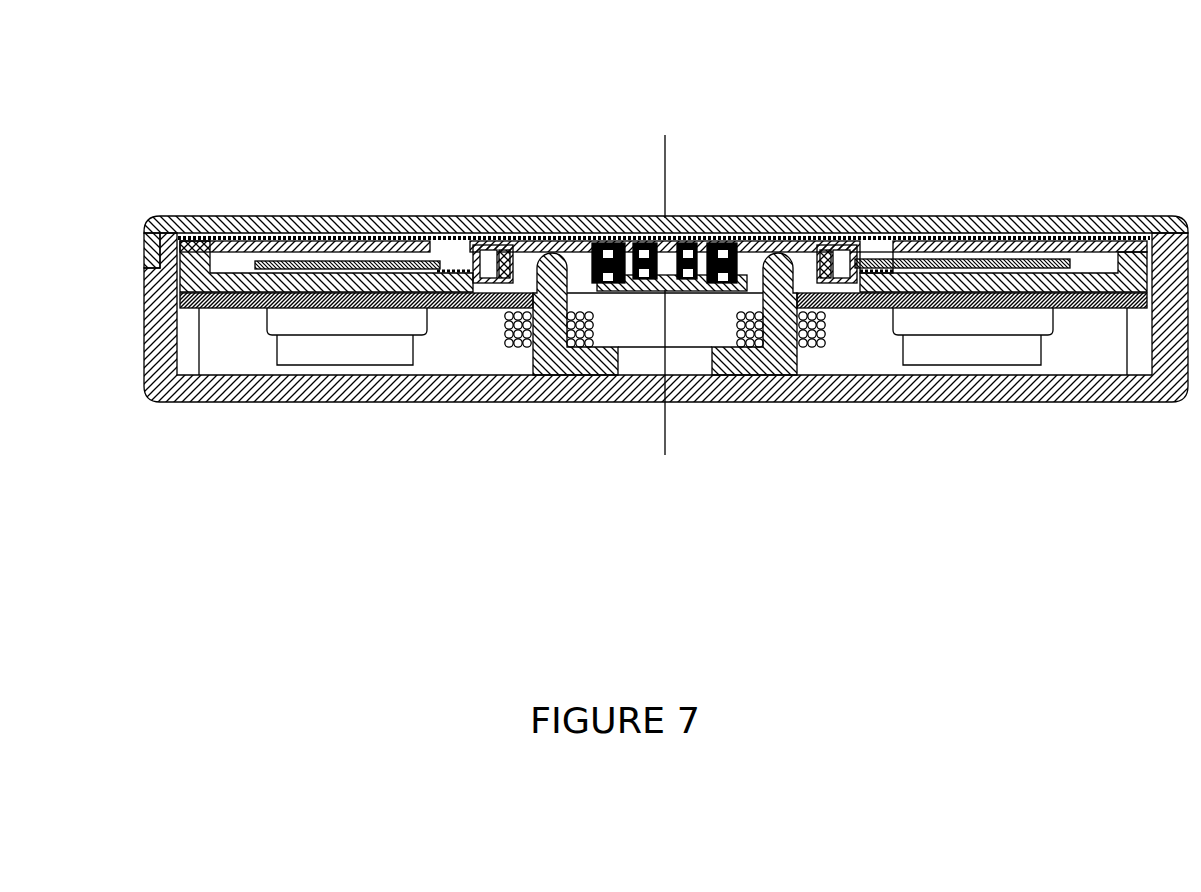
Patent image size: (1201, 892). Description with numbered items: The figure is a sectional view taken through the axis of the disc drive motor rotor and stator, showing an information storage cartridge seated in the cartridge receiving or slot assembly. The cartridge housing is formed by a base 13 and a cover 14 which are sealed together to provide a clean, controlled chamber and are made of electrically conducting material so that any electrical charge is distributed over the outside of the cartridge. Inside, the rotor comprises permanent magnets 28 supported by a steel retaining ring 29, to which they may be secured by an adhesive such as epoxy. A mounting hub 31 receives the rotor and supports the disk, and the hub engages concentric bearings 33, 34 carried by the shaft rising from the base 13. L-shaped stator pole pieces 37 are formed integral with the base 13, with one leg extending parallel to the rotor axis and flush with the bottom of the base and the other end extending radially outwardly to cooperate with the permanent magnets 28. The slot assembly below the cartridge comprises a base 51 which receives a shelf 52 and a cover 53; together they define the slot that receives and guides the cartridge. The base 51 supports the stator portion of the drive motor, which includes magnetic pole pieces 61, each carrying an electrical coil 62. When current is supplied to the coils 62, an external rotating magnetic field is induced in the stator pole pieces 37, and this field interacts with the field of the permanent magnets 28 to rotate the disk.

The base 13 is at (275, 258).
The cover 14 is at (1000, 215).
The permanent magnets 28 is at (832, 218).
The steel retaining ring 29 is at (860, 218).
The mounting hub 31 is at (482, 233).
The bearing 33 is at (704, 218).
The bearing 34 is at (601, 218).
The L-shaped stator pole pieces 37 is at (530, 222).
The base 51 is at (268, 375).
The shelf 52 is at (1097, 305).
The cover 53 is at (386, 218).
The magnetic pole pieces 61 is at (737, 375).
The electrical coil 62 is at (512, 347).